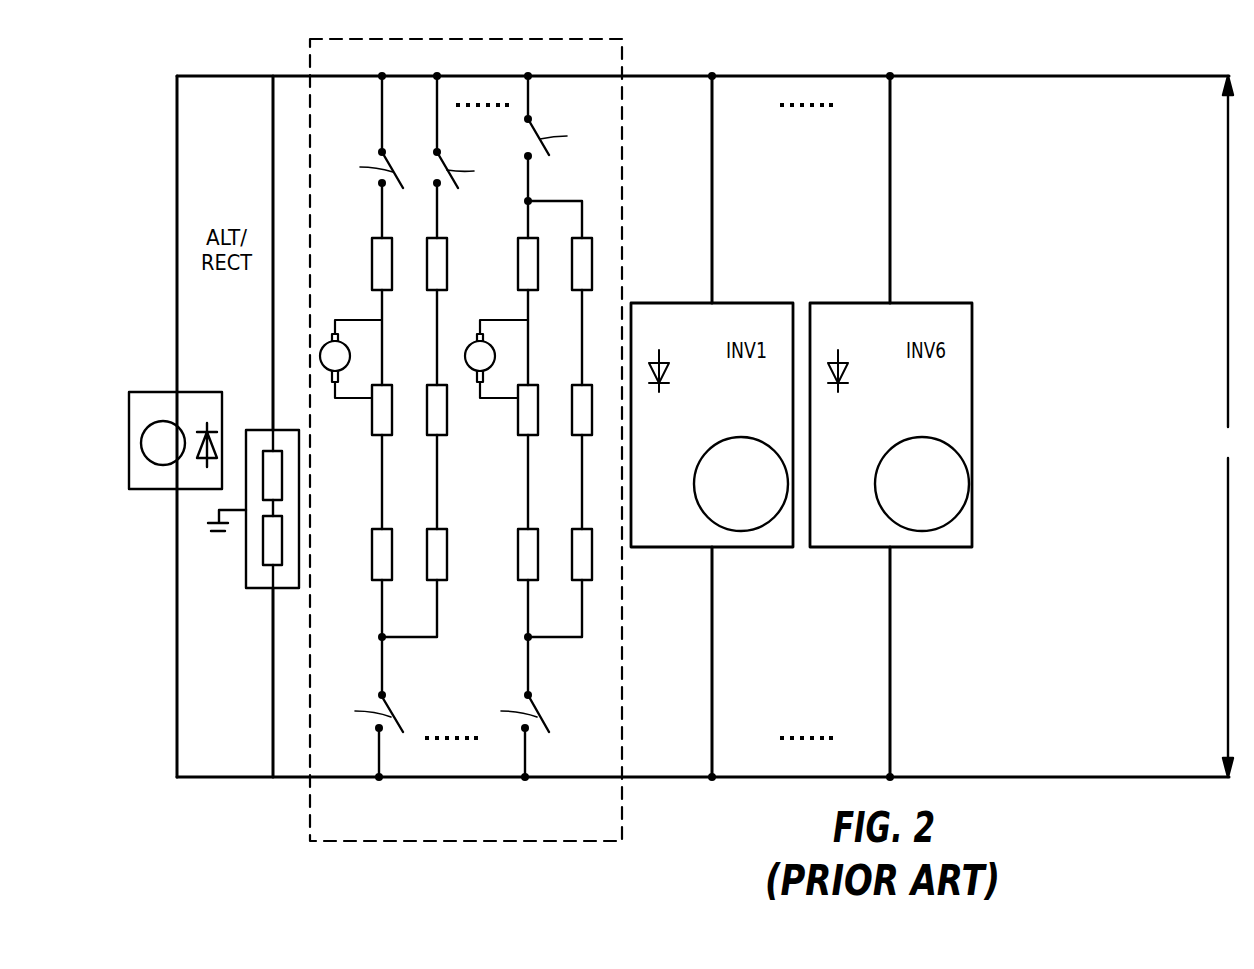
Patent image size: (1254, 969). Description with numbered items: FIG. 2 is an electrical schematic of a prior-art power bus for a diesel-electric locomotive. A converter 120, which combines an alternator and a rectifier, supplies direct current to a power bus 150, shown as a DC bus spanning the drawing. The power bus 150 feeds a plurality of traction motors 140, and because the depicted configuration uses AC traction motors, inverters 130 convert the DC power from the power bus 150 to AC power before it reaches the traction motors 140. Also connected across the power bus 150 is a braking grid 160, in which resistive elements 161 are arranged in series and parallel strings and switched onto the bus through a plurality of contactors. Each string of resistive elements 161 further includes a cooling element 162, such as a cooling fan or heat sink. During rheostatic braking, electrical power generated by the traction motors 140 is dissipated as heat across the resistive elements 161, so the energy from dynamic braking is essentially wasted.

The converter 120 is at (129, 440).
The inverter 130 is at (667, 372).
The traction motor 140 is at (741, 532).
The power bus 150 is at (1228, 426).
The braking grid 160 is at (468, 39).
The resistive element 161 is at (434, 238).
The cooling element 162 is at (360, 320).